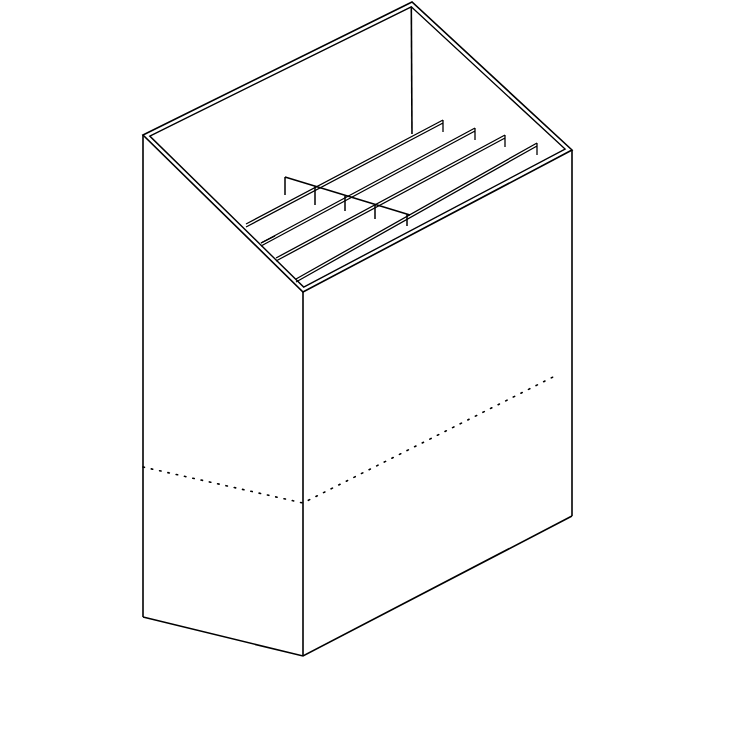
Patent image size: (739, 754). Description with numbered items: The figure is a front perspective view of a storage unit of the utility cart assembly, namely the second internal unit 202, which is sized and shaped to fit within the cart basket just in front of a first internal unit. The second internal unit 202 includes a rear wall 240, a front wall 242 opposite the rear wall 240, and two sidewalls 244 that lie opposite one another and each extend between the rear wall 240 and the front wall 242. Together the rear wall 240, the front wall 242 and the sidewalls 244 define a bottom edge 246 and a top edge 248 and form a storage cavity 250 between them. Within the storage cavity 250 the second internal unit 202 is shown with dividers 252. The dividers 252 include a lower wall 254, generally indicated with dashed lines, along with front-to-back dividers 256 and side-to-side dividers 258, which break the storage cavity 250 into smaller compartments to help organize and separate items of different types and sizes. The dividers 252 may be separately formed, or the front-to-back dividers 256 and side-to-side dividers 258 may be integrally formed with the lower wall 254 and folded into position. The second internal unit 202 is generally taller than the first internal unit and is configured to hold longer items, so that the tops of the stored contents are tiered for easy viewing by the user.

The second internal unit 202 is at (159, 71).
The rear wall 240 is at (522, 265).
The front wall 242 is at (268, 103).
The sidewalls 244 is at (437, 70).
The bottom edge 246 is at (500, 553).
The top edge 248 is at (528, 100).
The storage cavity 250 is at (240, 205).
The dividers 252 is at (532, 152).
The lower wall 254 is at (530, 388).
The front-to-back dividers 256 is at (415, 222).
The side-to-side dividers 258 is at (272, 238).